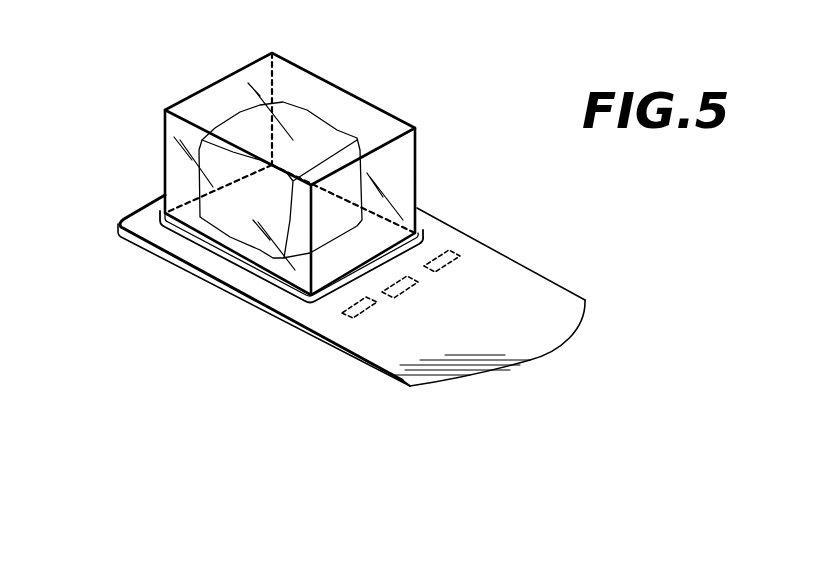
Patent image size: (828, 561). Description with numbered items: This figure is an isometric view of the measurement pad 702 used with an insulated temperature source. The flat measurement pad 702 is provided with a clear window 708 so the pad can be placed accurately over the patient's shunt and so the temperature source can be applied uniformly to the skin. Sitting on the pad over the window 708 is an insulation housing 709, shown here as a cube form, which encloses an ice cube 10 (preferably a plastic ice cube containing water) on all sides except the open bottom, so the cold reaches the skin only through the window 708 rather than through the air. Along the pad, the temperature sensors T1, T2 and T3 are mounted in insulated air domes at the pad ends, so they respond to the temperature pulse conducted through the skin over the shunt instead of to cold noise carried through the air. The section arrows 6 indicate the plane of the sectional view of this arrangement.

The ice cube 10 is at (313, 128).
The insulation housing 709 is at (432, 170).
The clear window 708 is at (230, 257).
The measurement pad 702 is at (622, 288).
The sensor T1 is at (418, 286).
The sensor T2 is at (460, 260).
The sensor T3 is at (348, 307).
The section line for FIG. 6 is at (135, 93).